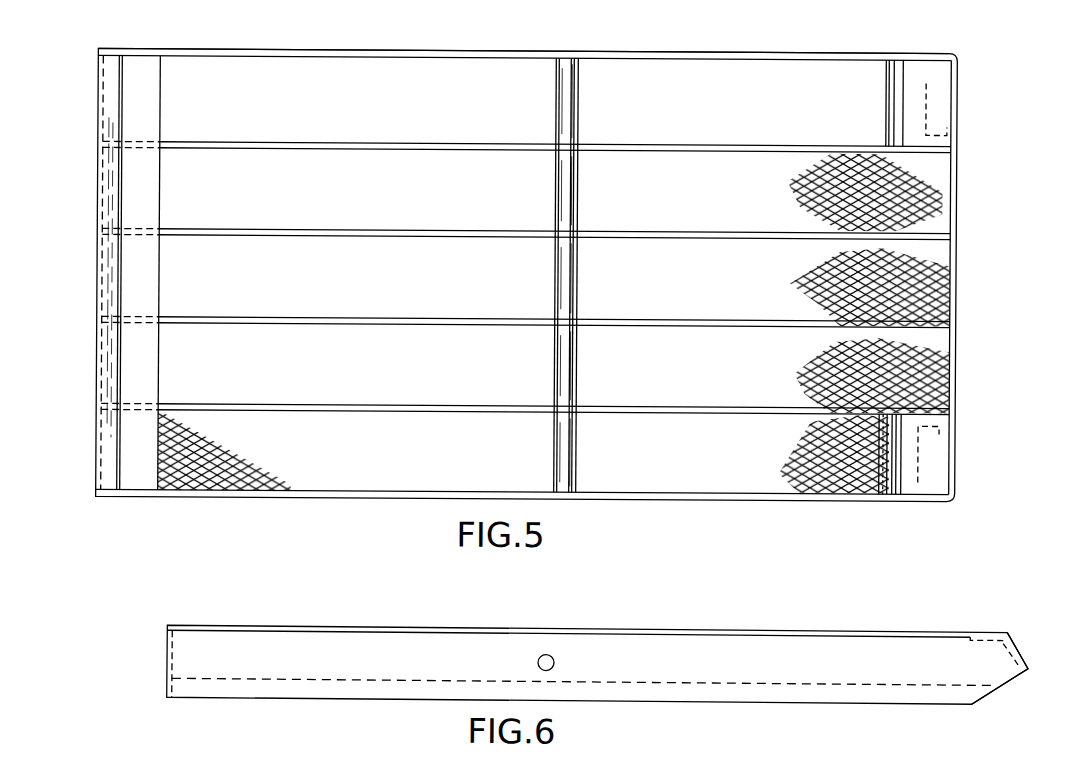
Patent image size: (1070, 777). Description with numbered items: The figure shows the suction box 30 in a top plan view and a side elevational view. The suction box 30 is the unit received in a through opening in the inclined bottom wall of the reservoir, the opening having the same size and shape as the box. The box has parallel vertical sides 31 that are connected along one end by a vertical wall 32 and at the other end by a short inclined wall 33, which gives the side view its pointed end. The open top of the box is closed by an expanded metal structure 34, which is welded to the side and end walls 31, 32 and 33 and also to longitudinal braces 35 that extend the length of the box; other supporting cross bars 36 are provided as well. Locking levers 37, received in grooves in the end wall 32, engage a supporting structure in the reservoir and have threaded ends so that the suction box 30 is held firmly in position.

In FIG. 5, the suction box 30 is at (340, 502).
In FIG. 6, the suction box 30 is at (575, 629).
In FIG. 5, the parallel vertical sides 31 is at (343, 50).
In FIG. 6, the parallel vertical sides 31 is at (265, 670).
In FIG. 5, the vertical wall 32 is at (956, 268).
In FIG. 6, the vertical wall 32 is at (167, 656).
In FIG. 5, the short inclined wall 33 is at (108, 357).
In FIG. 6, the short inclined wall 33 is at (1016, 649).
In FIG. 5, the expanded metal structure 34 is at (880, 183).
In FIG. 5, the longitudinal braces 35 is at (750, 238).
In FIG. 5, the supporting cross bars 36 is at (578, 363).
In FIG. 6, the supporting cross bars 36 is at (556, 664).
In FIG. 5, the locking levers 37 is at (930, 98).